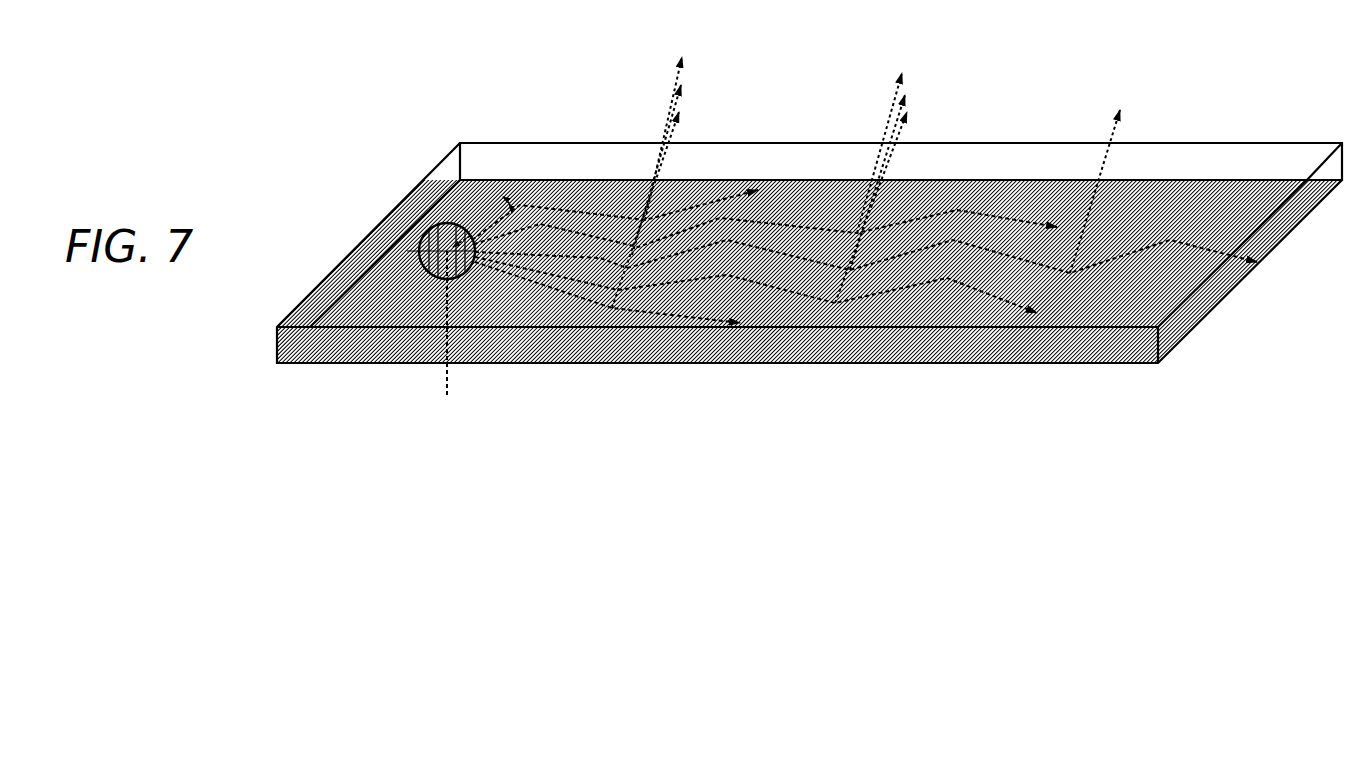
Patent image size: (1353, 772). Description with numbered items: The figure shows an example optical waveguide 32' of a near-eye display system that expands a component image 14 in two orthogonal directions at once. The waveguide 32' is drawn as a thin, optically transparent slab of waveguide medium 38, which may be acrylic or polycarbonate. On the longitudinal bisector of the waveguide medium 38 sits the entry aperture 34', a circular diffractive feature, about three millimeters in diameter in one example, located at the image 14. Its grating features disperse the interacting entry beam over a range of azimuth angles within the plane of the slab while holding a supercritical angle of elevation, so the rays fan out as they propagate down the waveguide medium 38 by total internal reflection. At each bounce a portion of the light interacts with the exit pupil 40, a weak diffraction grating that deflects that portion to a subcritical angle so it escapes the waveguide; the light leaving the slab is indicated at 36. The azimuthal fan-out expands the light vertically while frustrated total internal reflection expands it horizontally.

The waveguide 32' is at (796, 451).
The entry aperture 34' is at (450, 189).
The extracted light rays 36 is at (873, 182).
The waveguide medium 38 is at (762, 143).
The exit pupil 40 is at (1023, 213).
The image 14 is at (447, 336).